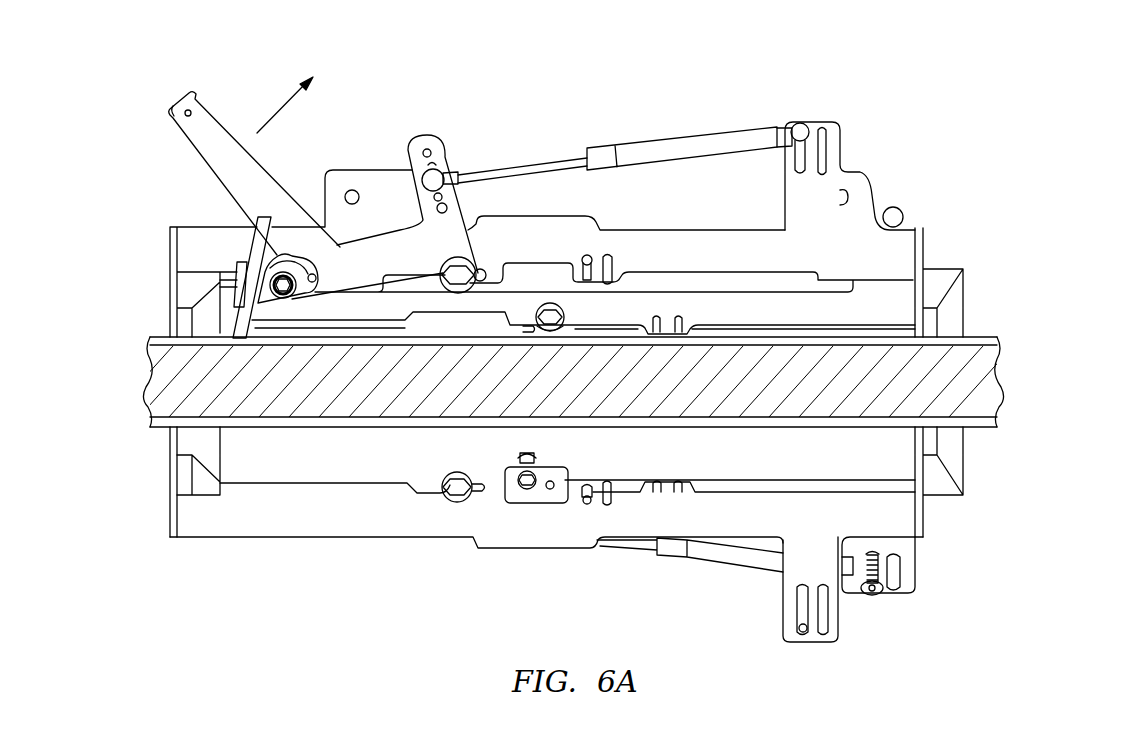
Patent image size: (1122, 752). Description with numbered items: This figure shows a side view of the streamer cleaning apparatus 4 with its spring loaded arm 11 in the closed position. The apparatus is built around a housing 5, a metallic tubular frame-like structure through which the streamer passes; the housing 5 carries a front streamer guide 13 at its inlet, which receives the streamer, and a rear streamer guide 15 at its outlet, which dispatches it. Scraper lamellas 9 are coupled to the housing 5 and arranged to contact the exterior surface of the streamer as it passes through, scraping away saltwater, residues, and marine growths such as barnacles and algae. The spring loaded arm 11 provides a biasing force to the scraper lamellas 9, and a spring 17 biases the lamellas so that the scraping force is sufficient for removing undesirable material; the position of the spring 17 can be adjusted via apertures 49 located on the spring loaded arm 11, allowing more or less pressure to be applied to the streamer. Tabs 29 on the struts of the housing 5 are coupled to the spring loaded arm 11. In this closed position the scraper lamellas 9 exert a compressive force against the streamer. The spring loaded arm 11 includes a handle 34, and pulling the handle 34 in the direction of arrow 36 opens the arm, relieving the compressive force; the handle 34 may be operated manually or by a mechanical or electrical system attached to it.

The streamer cleaning apparatus 4 is at (562, 90).
The housing 5 is at (990, 358).
The scraper lamellas 9 is at (257, 240).
The spring loaded arm 11 is at (216, 128).
The front streamer guide 13 is at (963, 298).
The rear streamer guide 15 is at (183, 468).
The spring 17 is at (643, 122).
The tab 29 is at (825, 118).
The handle 34 is at (173, 118).
The arrow 36 is at (280, 117).
The apertures 49 is at (411, 137).